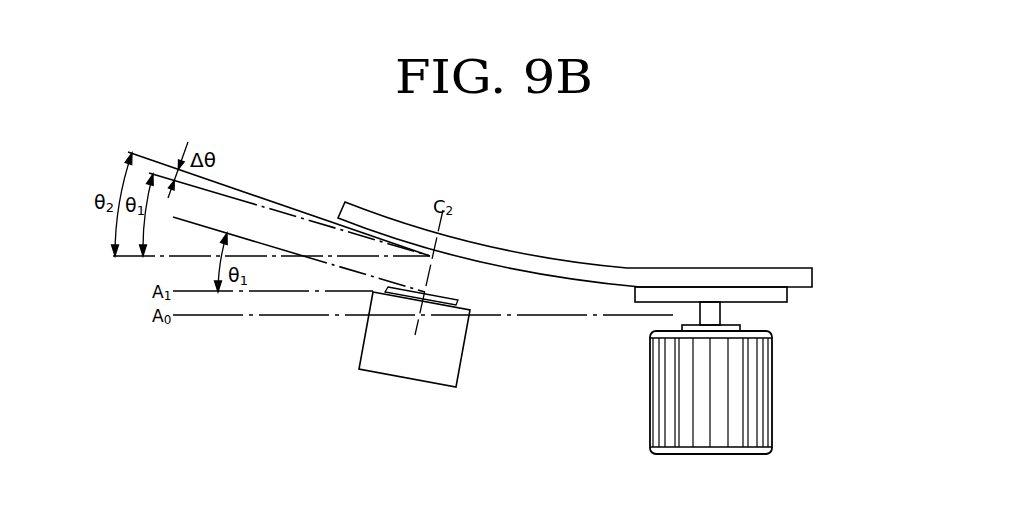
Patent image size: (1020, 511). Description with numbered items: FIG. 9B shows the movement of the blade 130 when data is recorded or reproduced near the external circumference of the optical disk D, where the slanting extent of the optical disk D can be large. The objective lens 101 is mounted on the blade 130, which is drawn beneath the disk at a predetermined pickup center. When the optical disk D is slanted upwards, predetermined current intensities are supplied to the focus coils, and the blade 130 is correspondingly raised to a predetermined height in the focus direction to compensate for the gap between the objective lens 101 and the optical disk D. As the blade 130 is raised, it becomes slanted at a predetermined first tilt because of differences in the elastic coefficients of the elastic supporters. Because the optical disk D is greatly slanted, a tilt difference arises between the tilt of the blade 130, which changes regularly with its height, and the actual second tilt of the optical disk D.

The objective lens 101 is at (440, 293).
The blade 130 is at (397, 370).
The optical disk D is at (577, 262).